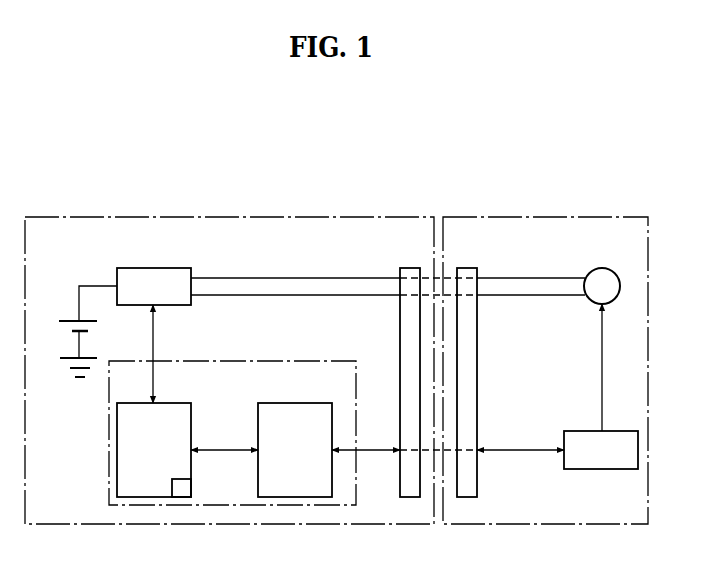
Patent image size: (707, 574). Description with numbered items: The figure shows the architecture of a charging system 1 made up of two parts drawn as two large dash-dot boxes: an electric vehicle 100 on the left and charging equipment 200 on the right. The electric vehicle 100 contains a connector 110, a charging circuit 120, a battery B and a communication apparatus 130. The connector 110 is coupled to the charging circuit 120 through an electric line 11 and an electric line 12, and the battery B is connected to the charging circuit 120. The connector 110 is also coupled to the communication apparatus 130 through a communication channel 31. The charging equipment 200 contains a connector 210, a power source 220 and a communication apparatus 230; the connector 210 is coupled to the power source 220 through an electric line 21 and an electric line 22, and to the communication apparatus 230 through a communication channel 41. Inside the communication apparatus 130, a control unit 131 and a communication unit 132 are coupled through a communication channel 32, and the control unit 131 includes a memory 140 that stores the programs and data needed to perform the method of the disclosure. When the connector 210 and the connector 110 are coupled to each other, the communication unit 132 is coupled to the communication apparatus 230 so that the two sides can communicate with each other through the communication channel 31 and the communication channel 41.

The charging system 1 is at (107, 128).
The electric vehicle 100 is at (363, 217).
The charging equipment 200 is at (592, 217).
The connector 110 is at (409, 266).
The connector 210 is at (466, 266).
The charging circuit 120 is at (178, 268).
The battery B is at (60, 321).
The communication apparatus 130 is at (258, 361).
The control unit 131 is at (178, 403).
The communication unit 132 is at (318, 403).
The memory 140 is at (173, 479).
The power source 220 is at (601, 266).
The communication apparatus 230 is at (625, 431).
The electric line 11 is at (303, 277).
The electric line 12 is at (303, 297).
The electric line 21 is at (530, 277).
The electric line 22 is at (530, 297).
The communication channel 31 is at (374, 450).
The communication channel 32 is at (224, 450).
The communication channel 41 is at (522, 450).